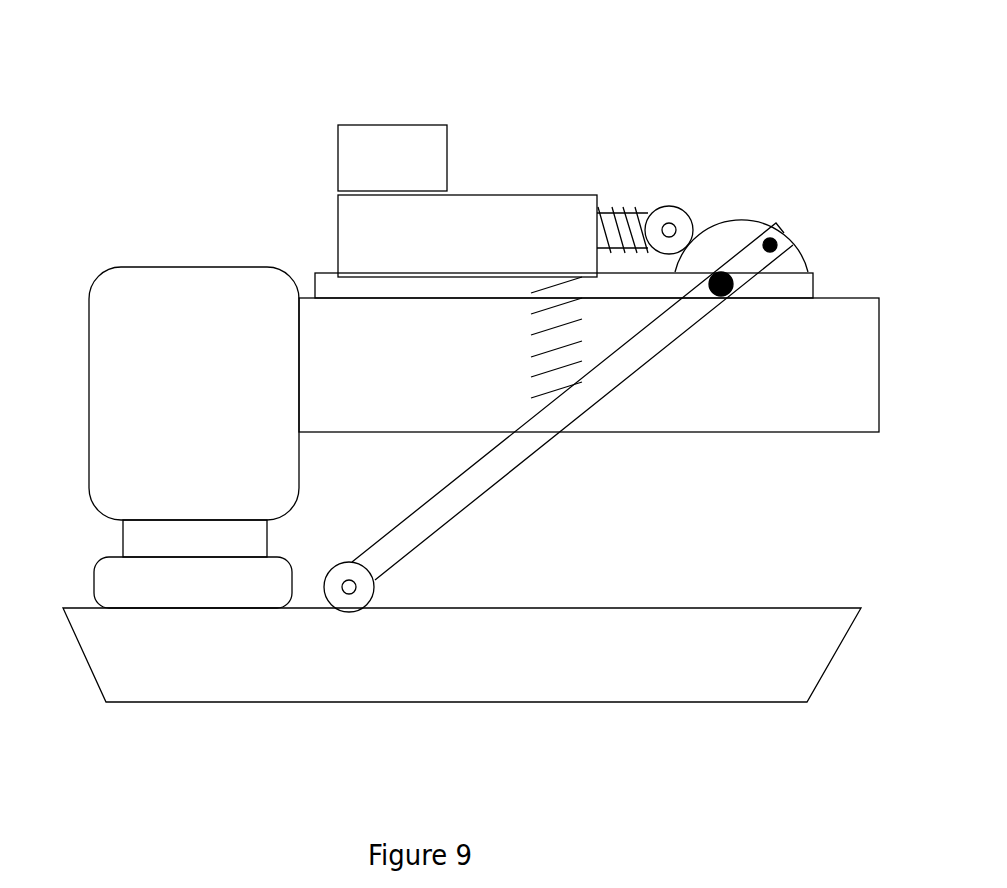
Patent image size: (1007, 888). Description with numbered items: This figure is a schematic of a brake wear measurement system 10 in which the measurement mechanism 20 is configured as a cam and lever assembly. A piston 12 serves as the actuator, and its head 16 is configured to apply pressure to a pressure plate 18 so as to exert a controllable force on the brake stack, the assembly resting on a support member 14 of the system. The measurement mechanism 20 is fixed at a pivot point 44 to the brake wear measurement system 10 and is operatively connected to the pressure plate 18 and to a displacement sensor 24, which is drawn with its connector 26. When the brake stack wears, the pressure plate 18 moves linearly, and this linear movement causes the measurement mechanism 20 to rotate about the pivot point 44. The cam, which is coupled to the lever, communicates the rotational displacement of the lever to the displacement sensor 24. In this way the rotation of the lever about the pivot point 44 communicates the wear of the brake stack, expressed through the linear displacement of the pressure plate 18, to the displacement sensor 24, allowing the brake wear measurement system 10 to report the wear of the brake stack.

The brake wear measurement system 10 is at (180, 64).
The piston 12 is at (165, 317).
The support member 14 is at (720, 401).
The head 16 is at (133, 592).
The pressure plate 18 is at (192, 703).
The measurement mechanism 20 is at (465, 485).
The displacement sensor 24 is at (530, 227).
The connector 26 is at (413, 150).
The pivot point 44 is at (732, 272).